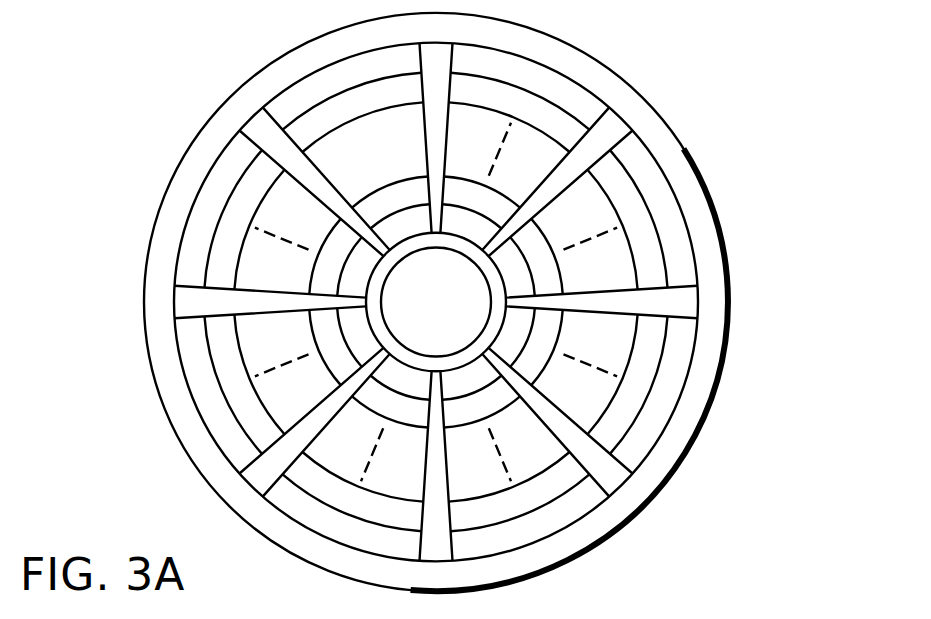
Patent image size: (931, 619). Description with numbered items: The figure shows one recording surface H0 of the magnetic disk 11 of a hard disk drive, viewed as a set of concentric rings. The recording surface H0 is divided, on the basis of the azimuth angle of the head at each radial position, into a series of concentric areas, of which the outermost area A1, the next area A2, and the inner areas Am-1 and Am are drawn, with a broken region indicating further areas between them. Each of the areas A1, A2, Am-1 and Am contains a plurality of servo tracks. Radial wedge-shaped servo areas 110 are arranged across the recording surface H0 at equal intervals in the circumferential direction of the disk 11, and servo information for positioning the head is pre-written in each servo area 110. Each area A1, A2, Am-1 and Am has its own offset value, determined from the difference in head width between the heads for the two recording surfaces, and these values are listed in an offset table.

The disk 11 is at (729, 274).
The recording surface H0 is at (221, 113).
The servo area 110 is at (597, 140).
The area A1 is at (206, 203).
The area A2 is at (218, 264).
The area Am-1 is at (525, 232).
The area Am is at (517, 285).